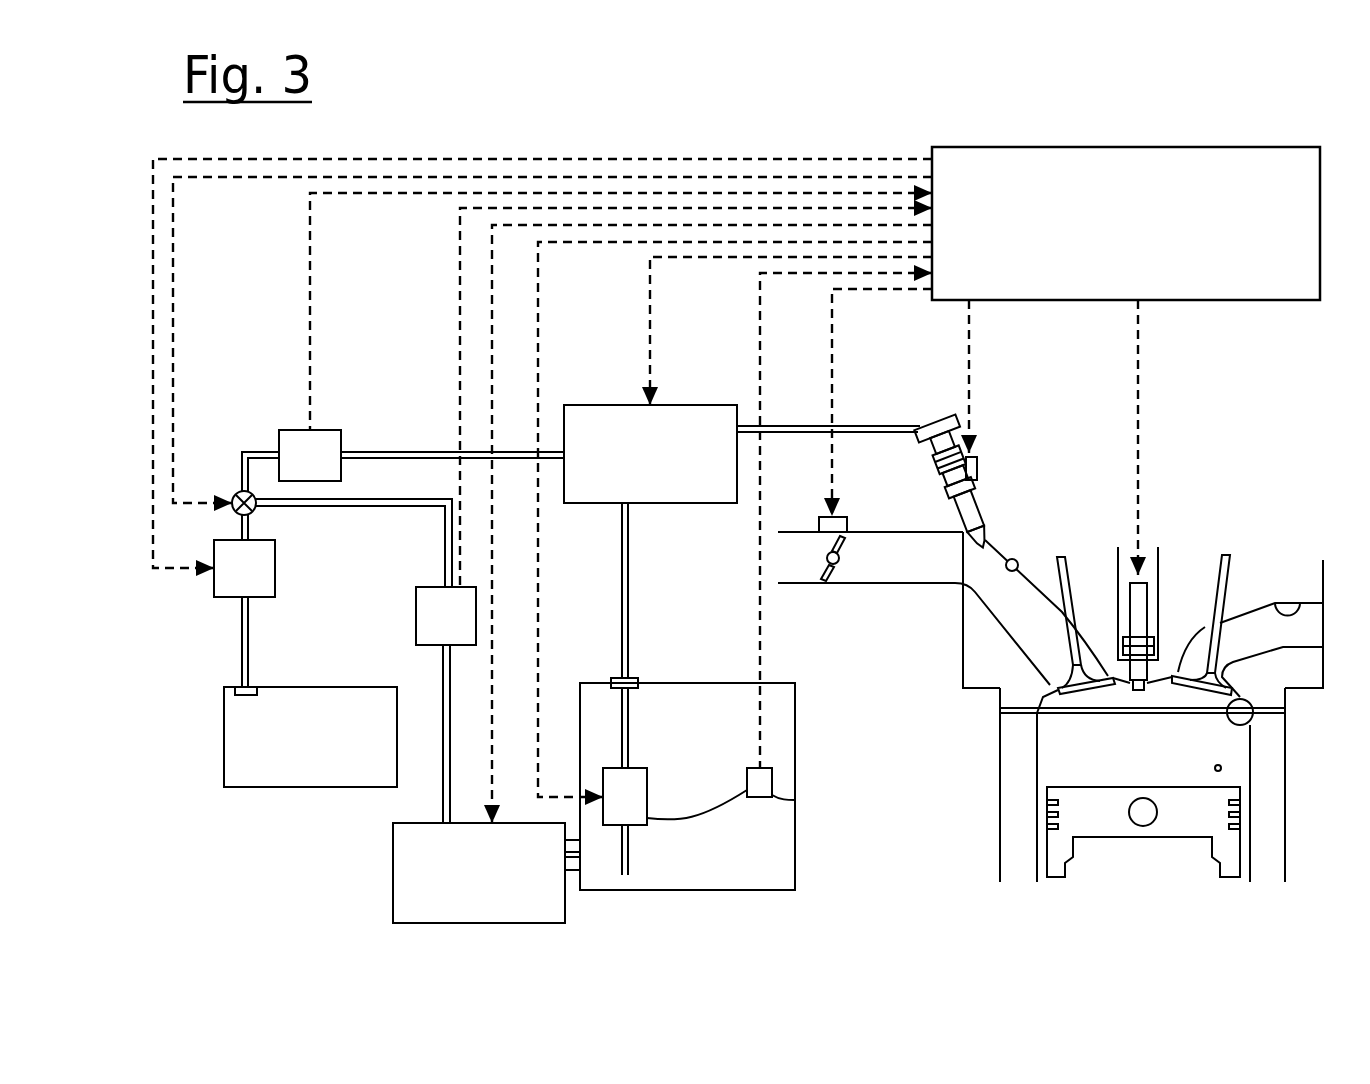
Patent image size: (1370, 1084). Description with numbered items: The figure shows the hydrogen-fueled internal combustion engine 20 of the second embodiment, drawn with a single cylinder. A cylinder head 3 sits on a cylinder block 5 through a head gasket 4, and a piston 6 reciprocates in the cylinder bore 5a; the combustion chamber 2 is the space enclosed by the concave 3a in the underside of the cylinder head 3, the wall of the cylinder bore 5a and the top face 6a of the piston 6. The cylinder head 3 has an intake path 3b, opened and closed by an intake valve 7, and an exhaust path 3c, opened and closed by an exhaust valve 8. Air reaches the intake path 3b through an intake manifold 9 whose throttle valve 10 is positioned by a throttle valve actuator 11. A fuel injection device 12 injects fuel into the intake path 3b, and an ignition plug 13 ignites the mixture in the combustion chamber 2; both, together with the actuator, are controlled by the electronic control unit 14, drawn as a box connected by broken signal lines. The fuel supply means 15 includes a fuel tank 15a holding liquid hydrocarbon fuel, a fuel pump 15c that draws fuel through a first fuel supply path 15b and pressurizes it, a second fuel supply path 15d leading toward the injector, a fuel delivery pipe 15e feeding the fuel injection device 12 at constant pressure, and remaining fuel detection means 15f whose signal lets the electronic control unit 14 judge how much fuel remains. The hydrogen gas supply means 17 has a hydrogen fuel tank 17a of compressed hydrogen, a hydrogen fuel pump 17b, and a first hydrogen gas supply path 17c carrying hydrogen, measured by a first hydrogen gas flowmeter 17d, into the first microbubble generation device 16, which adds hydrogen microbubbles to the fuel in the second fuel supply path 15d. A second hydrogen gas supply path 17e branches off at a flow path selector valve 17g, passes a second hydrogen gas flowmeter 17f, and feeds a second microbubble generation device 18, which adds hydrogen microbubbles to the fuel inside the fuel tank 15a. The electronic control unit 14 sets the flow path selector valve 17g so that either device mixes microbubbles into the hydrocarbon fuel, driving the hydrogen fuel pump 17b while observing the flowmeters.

The combustion chamber 2 is at (1222, 768).
The cylinder head 3 is at (963, 655).
The concave 3a is at (1250, 722).
The intake path 3b is at (1017, 560).
The exhaust path 3c is at (1282, 603).
The head gasket 4 is at (1000, 708).
The cylinder block 5 is at (1000, 830).
The cylinder bore 5a is at (1250, 880).
The piston 6 is at (1135, 838).
The top face 6a is at (1047, 787).
The intake valve 7 is at (1065, 563).
The exhaust valve 8 is at (1222, 572).
The intake manifold 9 is at (880, 532).
The throttle valve 10 is at (836, 572).
The throttle valve actuator 11 is at (819, 518).
The fuel injection device 12 is at (982, 502).
The ignition plug 13 is at (1122, 560).
The electronic control unit 14 is at (1200, 147).
The fuel supply means 15 is at (598, 392).
The fuel tank 15a is at (665, 683).
The first fuel supply path 15b is at (630, 866).
The fuel pump 15c is at (609, 826).
The second fuel supply path 15d is at (628, 598).
The fuel delivery pipe 15e is at (917, 420).
The remaining fuel detection means 15f is at (772, 781).
The first microbubble generation device 16 is at (700, 405).
The hydrogen gas supply means 17 is at (258, 400).
The hydrogen fuel tank 17a is at (283, 687).
The hydrogen fuel pump 17b is at (275, 580).
The first hydrogen gas supply path 17c is at (388, 452).
The first hydrogen gas flowmeter 17d is at (318, 430).
The second hydrogen gas supply path 17e is at (395, 507).
The second hydrogen gas flowmeter 17f is at (416, 615).
The flow path selector valve 17g is at (236, 493).
The second microbubble generation device 18 is at (393, 840).
The hydrogen-fueled internal combustion engine 20 is at (1272, 415).